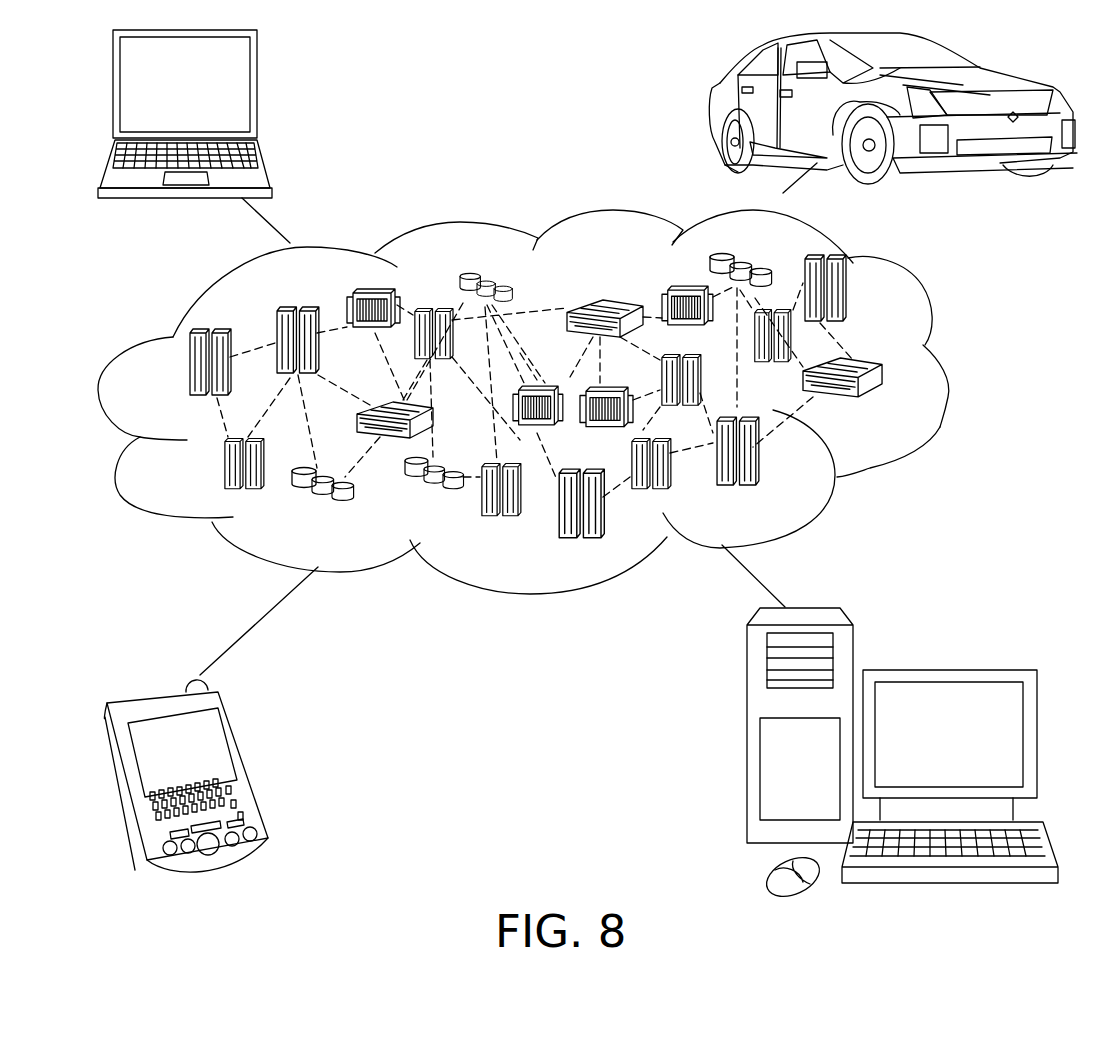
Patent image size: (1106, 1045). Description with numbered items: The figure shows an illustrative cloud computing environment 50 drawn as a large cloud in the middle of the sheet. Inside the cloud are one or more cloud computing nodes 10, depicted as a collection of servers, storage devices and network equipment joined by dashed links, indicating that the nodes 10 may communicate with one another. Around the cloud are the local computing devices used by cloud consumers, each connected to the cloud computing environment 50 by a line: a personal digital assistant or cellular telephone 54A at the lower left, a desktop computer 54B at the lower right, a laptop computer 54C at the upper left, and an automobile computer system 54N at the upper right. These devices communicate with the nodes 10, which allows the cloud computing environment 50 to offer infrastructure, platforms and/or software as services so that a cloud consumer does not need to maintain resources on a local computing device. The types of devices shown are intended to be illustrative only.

The cloud computing node 10 is at (888, 407).
The cloud computing environment 50 is at (945, 373).
The personal digital assistant or cellular telephone 54A is at (250, 766).
The desktop computer 54B is at (948, 670).
The laptop computer 54C is at (260, 97).
The automobile computer system 54N is at (720, 112).